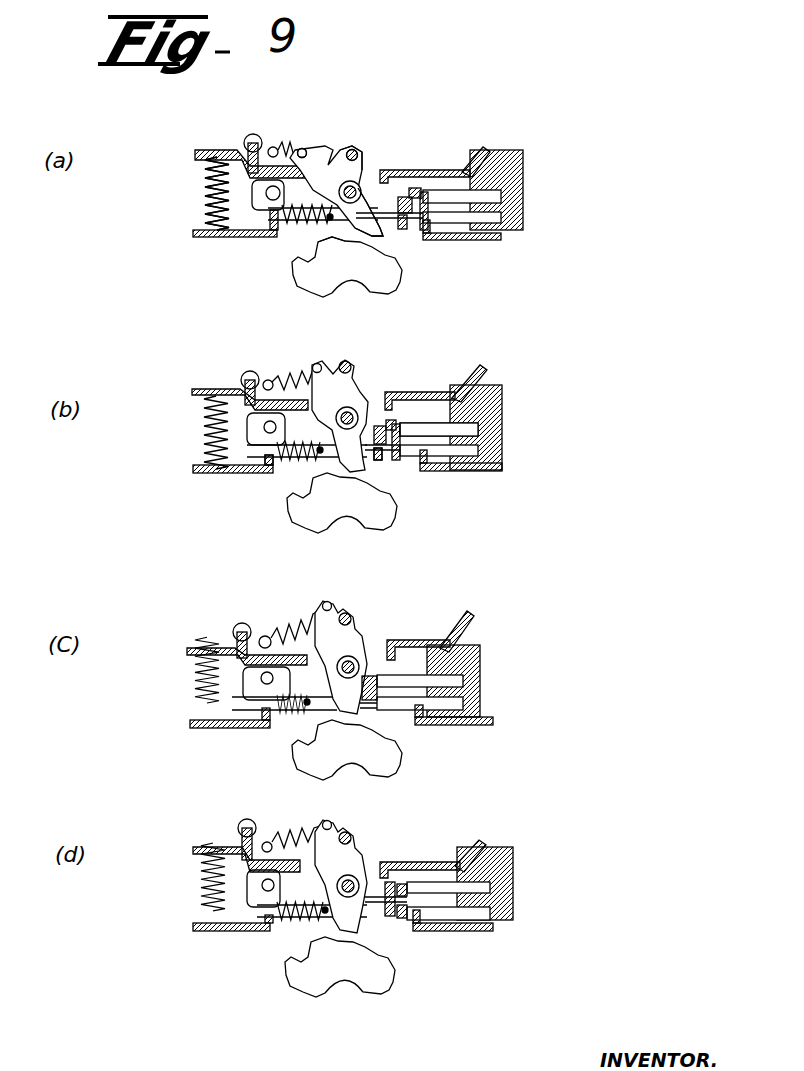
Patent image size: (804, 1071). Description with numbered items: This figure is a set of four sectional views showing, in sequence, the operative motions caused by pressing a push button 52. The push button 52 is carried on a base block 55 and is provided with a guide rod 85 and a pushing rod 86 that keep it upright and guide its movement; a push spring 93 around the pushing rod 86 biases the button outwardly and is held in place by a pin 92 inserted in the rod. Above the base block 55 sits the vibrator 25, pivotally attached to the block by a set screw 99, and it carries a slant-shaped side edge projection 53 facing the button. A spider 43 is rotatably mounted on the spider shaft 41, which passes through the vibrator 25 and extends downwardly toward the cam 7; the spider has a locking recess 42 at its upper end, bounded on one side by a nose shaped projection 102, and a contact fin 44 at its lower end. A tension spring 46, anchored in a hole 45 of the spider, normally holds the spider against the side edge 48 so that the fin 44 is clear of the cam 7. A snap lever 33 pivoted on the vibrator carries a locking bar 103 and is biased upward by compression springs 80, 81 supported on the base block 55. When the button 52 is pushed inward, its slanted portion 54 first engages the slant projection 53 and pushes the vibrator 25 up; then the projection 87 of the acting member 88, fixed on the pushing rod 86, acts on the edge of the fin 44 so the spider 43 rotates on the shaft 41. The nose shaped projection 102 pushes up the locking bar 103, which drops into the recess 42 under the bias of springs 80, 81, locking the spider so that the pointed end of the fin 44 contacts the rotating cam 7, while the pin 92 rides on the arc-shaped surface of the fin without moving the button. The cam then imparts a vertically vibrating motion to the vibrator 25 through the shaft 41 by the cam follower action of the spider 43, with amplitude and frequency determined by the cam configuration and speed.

The cam 7 is at (382, 281).
The vibrator 25 is at (430, 170).
The snap lever 33 is at (298, 168).
The spider shaft 41 is at (380, 232).
The locking recess 42 is at (366, 851).
The spider 43 is at (290, 224).
The contact fin 44 is at (380, 238).
The hole 45 is at (352, 147).
The tension spring 46 is at (256, 134).
The side edge 48 is at (290, 372).
The push button 52 is at (523, 196).
The side edge projection 53 is at (488, 150).
The slanted portion 54 is at (523, 160).
The base block 55 is at (495, 241).
The compression spring 80 is at (205, 183).
The compression spring 81 is at (189, 524).
The guide rod 85 is at (502, 416).
The pushing rod 86 is at (272, 474).
The projection 87 is at (412, 190).
The acting member 88 is at (398, 464).
The pin 92 is at (340, 236).
The push spring 93 is at (272, 238).
The set screw 99 is at (266, 196).
The nose shaped projection 102 is at (215, 152).
The locking bar 103 is at (358, 155).